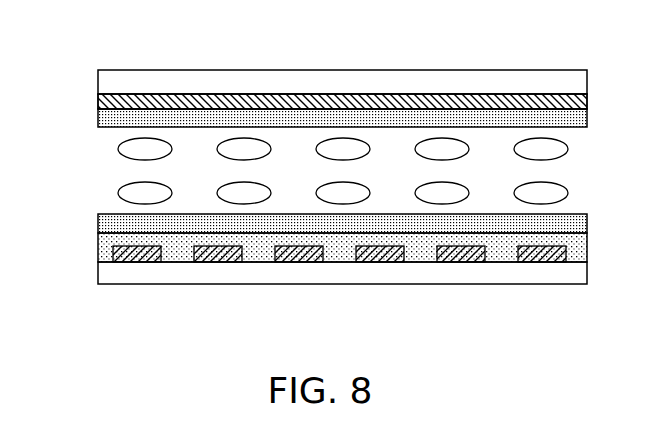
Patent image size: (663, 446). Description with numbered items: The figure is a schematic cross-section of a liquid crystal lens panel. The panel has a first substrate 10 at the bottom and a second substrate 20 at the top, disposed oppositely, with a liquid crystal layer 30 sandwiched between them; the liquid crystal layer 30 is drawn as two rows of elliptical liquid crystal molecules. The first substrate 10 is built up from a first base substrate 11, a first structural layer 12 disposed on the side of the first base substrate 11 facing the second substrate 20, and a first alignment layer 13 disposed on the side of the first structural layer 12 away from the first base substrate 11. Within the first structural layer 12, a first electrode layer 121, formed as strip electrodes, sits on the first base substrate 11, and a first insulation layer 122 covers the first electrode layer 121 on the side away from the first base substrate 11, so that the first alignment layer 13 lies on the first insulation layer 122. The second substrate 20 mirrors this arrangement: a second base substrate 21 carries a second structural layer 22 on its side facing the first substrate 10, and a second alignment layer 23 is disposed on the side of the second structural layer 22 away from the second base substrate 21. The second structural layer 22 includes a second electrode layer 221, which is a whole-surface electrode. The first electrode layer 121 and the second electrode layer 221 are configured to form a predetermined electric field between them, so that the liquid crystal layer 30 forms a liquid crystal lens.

The first substrate 10 is at (333, 278).
The first base substrate 11 is at (173, 268).
The first structural layer 12 is at (362, 288).
The first electrode layer 121 is at (383, 248).
The first insulation layer 122 is at (263, 243).
The first alignment layer 13 is at (473, 222).
The second substrate 20 is at (333, 72).
The second base substrate 21 is at (173, 82).
The second structural layer 22 is at (589, 94).
The second electrode layer 221 is at (315, 100).
The second alignment layer 23 is at (461, 110).
The liquid crystal layer 30 is at (85, 133).